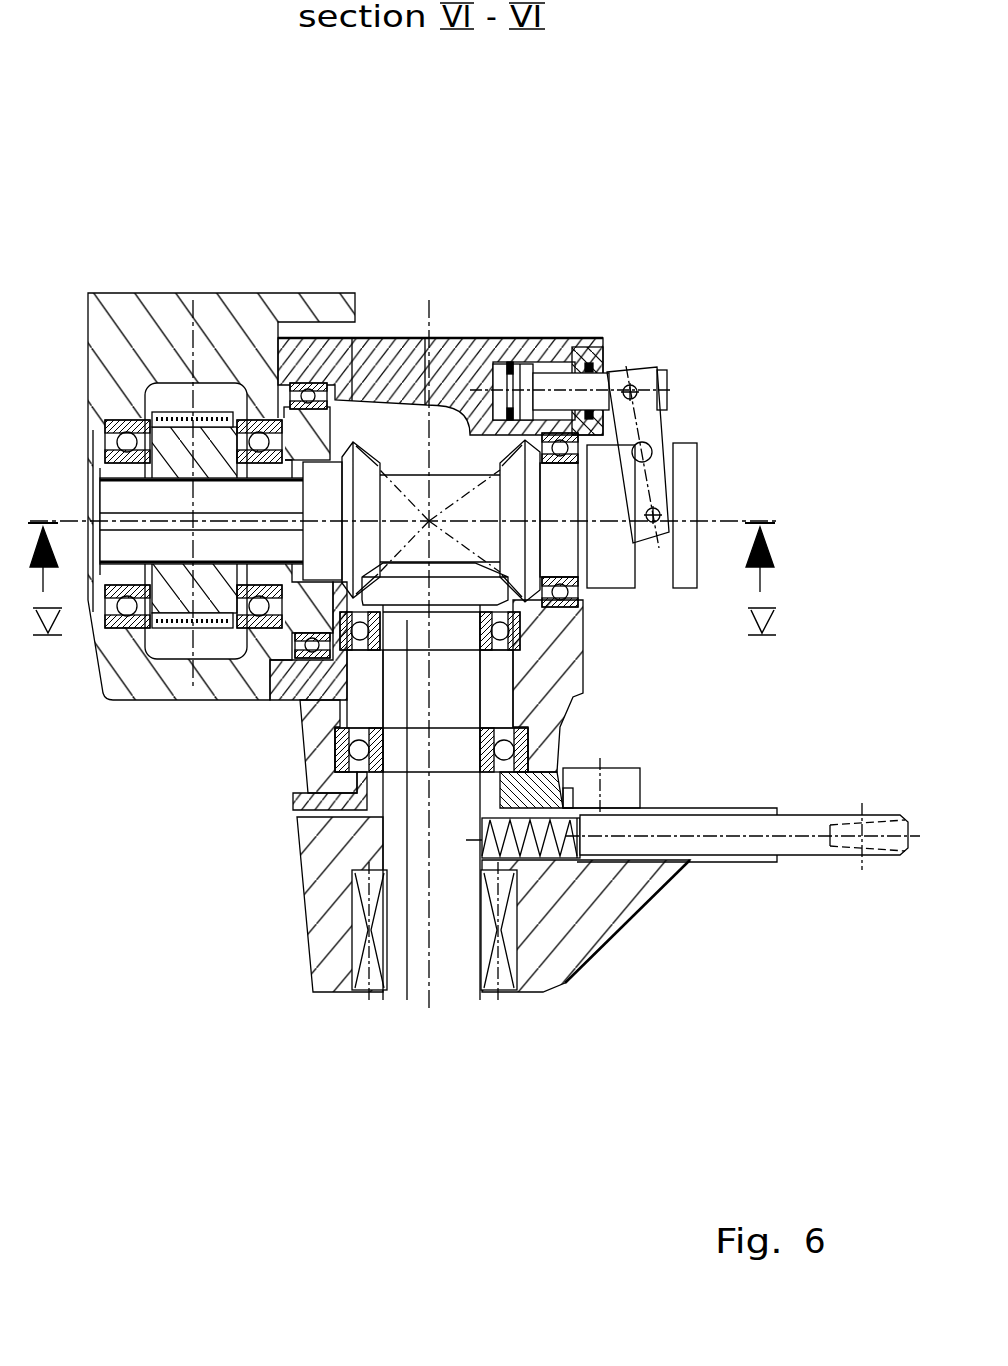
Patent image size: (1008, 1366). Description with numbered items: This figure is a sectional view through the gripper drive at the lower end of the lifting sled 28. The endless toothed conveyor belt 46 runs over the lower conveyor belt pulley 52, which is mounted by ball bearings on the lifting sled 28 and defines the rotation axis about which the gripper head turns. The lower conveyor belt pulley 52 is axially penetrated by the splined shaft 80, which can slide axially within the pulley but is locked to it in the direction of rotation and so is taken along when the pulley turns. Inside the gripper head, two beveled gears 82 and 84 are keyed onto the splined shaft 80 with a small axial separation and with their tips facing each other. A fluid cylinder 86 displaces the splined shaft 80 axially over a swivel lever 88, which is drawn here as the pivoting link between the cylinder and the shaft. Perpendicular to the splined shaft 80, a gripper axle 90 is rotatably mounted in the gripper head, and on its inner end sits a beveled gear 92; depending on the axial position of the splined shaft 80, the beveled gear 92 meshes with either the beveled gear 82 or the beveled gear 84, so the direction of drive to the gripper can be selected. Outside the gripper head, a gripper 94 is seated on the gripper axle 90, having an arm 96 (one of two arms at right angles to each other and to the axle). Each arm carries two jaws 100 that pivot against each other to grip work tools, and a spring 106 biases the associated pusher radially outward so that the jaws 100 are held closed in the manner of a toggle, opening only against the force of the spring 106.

The lifting sled 28 is at (237, 683).
The endless toothed conveyor belt 46 is at (183, 632).
The lower conveyor belt pulley 52 is at (218, 462).
The splined shaft 80 is at (155, 497).
The beveled gear 82 is at (365, 493).
The beveled gear 84 is at (516, 497).
The fluid cylinder 86 is at (525, 377).
The lever 88 is at (635, 420).
The gripper axle 90 is at (458, 808).
The beveled gear 92 is at (406, 578).
The gripper 94 is at (328, 912).
The arm 96 is at (642, 888).
The jaws 100 is at (790, 845).
The spring 106 is at (540, 848).